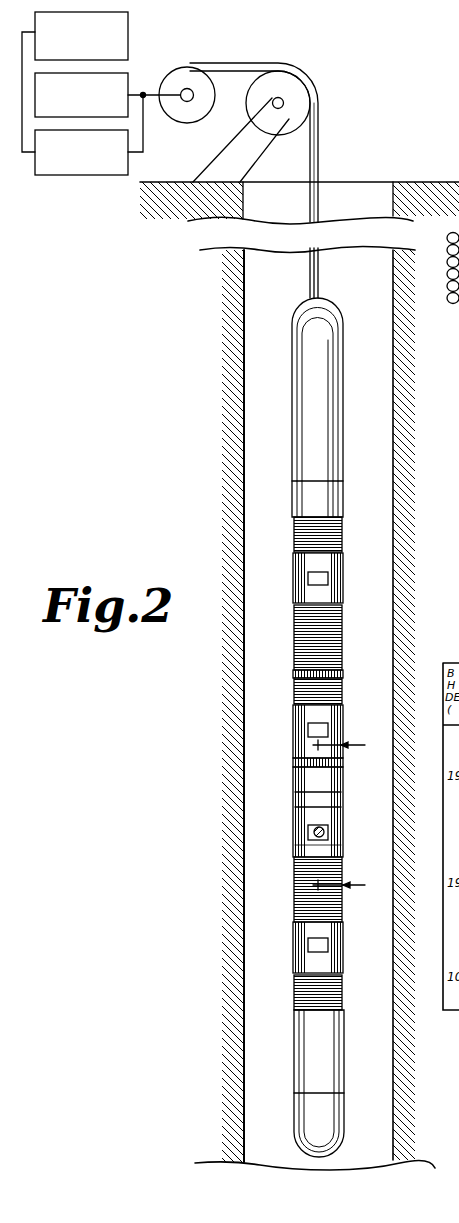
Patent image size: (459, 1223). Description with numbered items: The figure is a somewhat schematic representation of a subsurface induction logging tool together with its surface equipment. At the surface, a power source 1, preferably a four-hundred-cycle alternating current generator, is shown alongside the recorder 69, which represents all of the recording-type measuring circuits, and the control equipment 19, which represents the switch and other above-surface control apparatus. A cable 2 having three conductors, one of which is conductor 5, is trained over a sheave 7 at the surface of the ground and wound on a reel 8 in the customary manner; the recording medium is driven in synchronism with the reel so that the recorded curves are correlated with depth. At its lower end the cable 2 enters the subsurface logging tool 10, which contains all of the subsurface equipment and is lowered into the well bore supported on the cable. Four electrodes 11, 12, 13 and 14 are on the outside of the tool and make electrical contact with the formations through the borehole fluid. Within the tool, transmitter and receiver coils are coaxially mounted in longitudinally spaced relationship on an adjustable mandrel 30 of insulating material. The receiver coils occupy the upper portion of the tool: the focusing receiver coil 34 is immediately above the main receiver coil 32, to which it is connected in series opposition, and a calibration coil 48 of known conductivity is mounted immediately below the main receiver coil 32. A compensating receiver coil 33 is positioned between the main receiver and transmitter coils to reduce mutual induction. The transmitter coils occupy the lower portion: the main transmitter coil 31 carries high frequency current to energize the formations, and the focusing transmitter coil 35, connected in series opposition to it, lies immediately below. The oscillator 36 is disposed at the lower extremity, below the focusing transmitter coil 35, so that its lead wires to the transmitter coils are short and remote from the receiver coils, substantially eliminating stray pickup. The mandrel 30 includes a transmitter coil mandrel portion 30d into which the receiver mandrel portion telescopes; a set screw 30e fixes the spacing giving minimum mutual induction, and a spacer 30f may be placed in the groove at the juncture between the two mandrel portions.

The power source 1 is at (129, 22).
The recorder 69 is at (120, 72).
The control equipment 19 is at (90, 178).
The reel 8 is at (178, 72).
The sheave 7 is at (303, 101).
The cable 2 is at (323, 155).
The subsurface logging tool 10 is at (316, 727).
The focusing receiver coil 34 is at (303, 531).
The electrode 11 is at (307, 578).
The main receiver coil 32 is at (343, 630).
The calibration coil 48 is at (296, 690).
The electrode 12 is at (308, 730).
The compensating receiver coil 33 is at (296, 762).
The adjustable mandrel 30 is at (291, 809).
The spacer 30f is at (330, 793).
The set screw 30e is at (328, 828).
The transmitter coil mandrel portion 30d is at (343, 839).
The electrode 13 is at (308, 832).
The main transmitter coil 31 is at (298, 900).
The electrode 14 is at (308, 945).
The focusing transmitter coil 35 is at (296, 990).
The oscillator 36 is at (300, 1103).
The conductor 5 is at (339, 816).